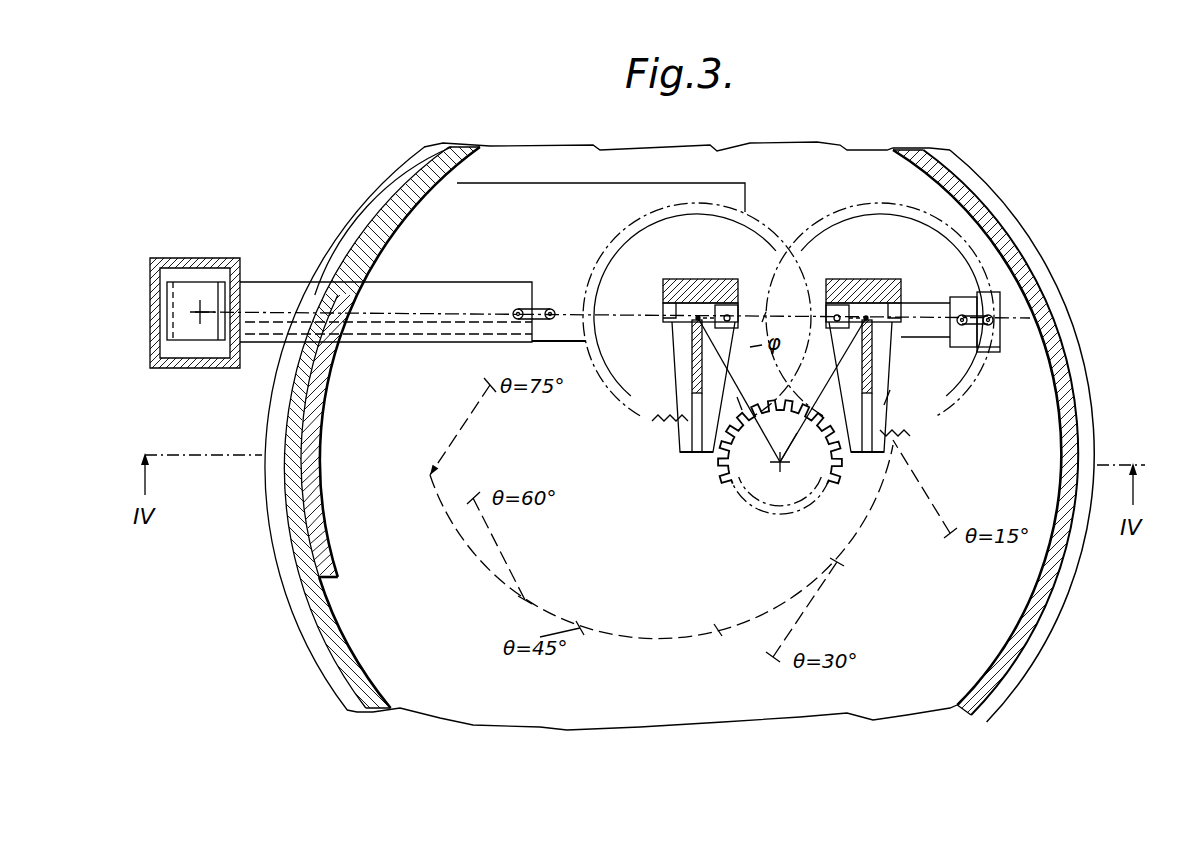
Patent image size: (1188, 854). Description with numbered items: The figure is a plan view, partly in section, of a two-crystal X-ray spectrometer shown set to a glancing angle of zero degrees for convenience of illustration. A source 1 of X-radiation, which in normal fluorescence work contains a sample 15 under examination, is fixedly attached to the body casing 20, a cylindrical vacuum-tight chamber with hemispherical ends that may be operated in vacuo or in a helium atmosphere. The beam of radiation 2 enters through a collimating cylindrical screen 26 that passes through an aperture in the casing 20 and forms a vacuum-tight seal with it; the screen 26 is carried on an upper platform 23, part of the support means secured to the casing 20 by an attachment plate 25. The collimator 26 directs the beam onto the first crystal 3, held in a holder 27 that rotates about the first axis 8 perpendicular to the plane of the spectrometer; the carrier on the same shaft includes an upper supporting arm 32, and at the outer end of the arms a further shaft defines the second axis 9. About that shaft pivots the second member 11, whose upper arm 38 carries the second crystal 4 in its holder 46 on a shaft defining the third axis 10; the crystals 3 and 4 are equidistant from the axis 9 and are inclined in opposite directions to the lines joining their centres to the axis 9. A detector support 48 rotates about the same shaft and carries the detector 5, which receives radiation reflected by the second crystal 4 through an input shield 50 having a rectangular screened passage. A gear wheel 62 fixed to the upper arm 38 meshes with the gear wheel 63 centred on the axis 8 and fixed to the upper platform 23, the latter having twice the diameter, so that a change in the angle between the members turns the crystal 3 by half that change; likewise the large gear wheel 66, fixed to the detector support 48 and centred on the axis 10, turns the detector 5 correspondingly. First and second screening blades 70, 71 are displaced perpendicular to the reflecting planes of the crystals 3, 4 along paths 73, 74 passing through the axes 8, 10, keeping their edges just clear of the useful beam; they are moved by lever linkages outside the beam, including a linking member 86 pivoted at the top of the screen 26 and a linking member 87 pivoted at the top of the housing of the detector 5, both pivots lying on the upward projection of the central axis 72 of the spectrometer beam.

The source of X-radiation 1 is at (200, 262).
The sample substance under examination 15 is at (207, 290).
The beam of radiation 2 is at (480, 300).
The collimating cylindrical screen 26 is at (442, 292).
The linking member 86 is at (545, 305).
The body casing 20 is at (385, 190).
The attachment plate 25 is at (322, 540).
The upper platform 23 is at (522, 183).
The gear wheel 63 is at (617, 243).
The large gear wheel 66 is at (820, 216).
The central axis of the spectrometer beam 72 is at (775, 305).
The crystal holder 27 is at (663, 290).
The first axis 8 is at (698, 316).
The first crystal 3 is at (690, 320).
The first screening blade 70 is at (692, 368).
The second screening blade 71 is at (737, 397).
The path of first screening blade 73 is at (692, 418).
The upper supporting arm 32 is at (700, 452).
The crystal holder 46 is at (830, 303).
The third axis 10 is at (866, 316).
The second crystal 4 is at (880, 335).
The path of second screening blade 74 is at (895, 440).
The upper arm 38 is at (866, 455).
The detector support 48 is at (930, 307).
The detector 5 is at (1000, 345).
The linking member 87 is at (985, 312).
The input shield 50 is at (960, 345).
The second axis 9 is at (780, 462).
The gear wheel 62 is at (757, 512).
The second member 11 is at (805, 458).